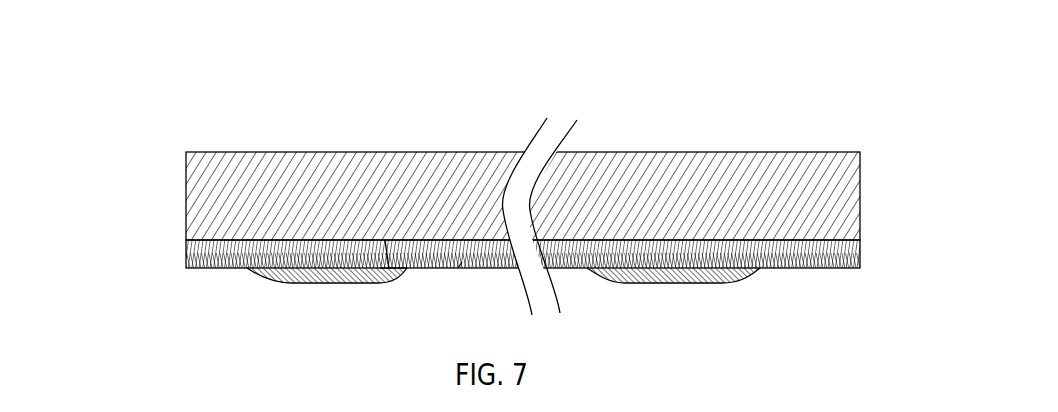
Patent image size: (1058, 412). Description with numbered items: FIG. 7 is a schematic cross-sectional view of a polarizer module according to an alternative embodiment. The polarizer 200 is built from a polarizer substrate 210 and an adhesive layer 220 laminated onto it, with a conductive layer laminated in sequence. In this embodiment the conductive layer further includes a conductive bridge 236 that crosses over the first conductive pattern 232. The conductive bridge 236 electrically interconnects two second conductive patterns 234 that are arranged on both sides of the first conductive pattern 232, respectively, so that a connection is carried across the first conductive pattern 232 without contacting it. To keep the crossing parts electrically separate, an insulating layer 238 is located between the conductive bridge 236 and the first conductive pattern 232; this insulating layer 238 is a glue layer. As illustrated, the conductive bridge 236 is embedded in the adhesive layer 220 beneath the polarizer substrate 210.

The polarizer 200 is at (490, 55).
The polarizer substrate 210 is at (186, 207).
The adhesive layer 220 is at (862, 252).
The first conductive pattern 232 is at (387, 267).
The second conductive patterns 234 is at (460, 268).
The conductive bridge 236 is at (394, 270).
The insulating layer 238 is at (283, 283).